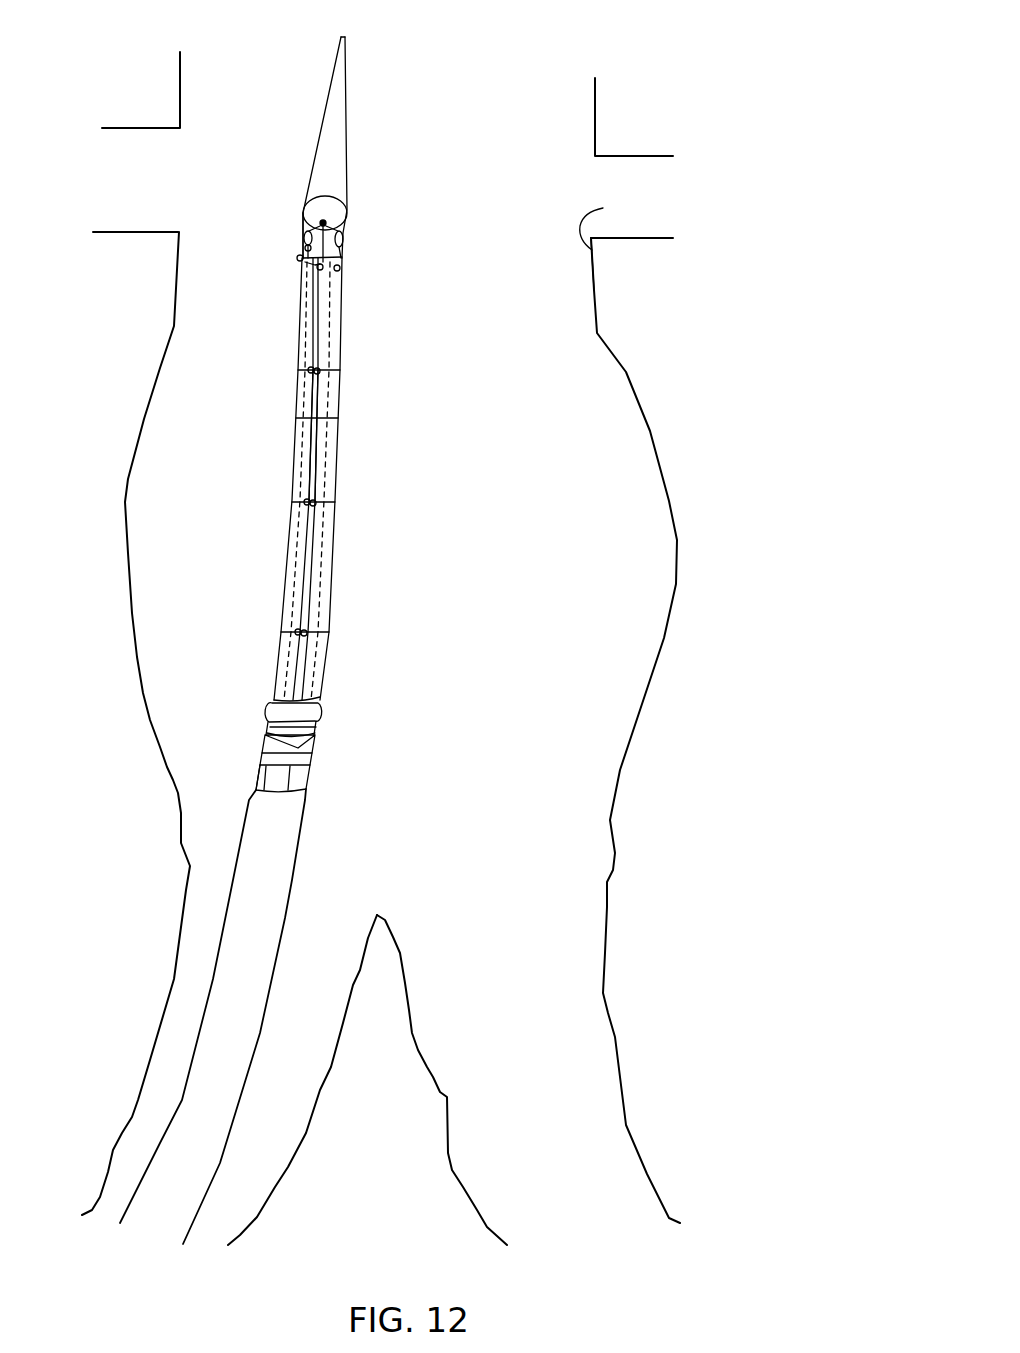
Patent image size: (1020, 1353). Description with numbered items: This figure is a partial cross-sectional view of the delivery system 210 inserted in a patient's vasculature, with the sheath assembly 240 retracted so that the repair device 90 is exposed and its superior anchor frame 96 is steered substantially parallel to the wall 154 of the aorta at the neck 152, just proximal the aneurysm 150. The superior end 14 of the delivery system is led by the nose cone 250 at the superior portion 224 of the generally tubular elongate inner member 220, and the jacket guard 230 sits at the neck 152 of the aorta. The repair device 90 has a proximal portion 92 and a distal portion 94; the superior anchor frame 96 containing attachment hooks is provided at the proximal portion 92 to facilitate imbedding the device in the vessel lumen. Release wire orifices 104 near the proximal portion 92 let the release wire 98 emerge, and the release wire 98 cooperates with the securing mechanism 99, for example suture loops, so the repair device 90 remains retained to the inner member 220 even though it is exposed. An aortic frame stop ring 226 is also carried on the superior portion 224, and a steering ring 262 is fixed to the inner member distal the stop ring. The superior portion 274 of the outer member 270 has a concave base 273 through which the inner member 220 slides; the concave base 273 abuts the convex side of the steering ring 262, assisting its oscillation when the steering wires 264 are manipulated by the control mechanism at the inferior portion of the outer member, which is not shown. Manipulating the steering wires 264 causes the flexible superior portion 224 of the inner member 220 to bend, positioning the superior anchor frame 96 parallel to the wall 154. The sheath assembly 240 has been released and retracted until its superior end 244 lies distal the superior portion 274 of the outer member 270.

The superior end 14 is at (343, 37).
The nose cone 250 is at (335, 107).
The jacket guard 230 is at (302, 217).
The release wire orifices 104 is at (337, 213).
The superior anchor frame 96 is at (337, 245).
The proximal portion 92 is at (341, 283).
The aortic frame stop ring 226 is at (300, 290).
The securing mechanism 99 is at (298, 368).
The release wire 98 is at (297, 418).
The repair device 90 is at (340, 421).
The delivery system 210 is at (388, 496).
The distal portion 94 is at (331, 622).
The superior portion 224 is at (312, 712).
The steering ring 262 is at (317, 724).
The concave base 273 is at (314, 736).
The steering wires 264 is at (303, 775).
The superior end 244 is at (303, 785).
The superior portion 274 is at (268, 706).
The outer member 270 is at (263, 730).
The inner member 220 is at (260, 773).
The sheath assembly 240 is at (287, 920).
The wall 154 is at (603, 208).
The neck 152 is at (595, 283).
The aneurysm 150 is at (669, 501).